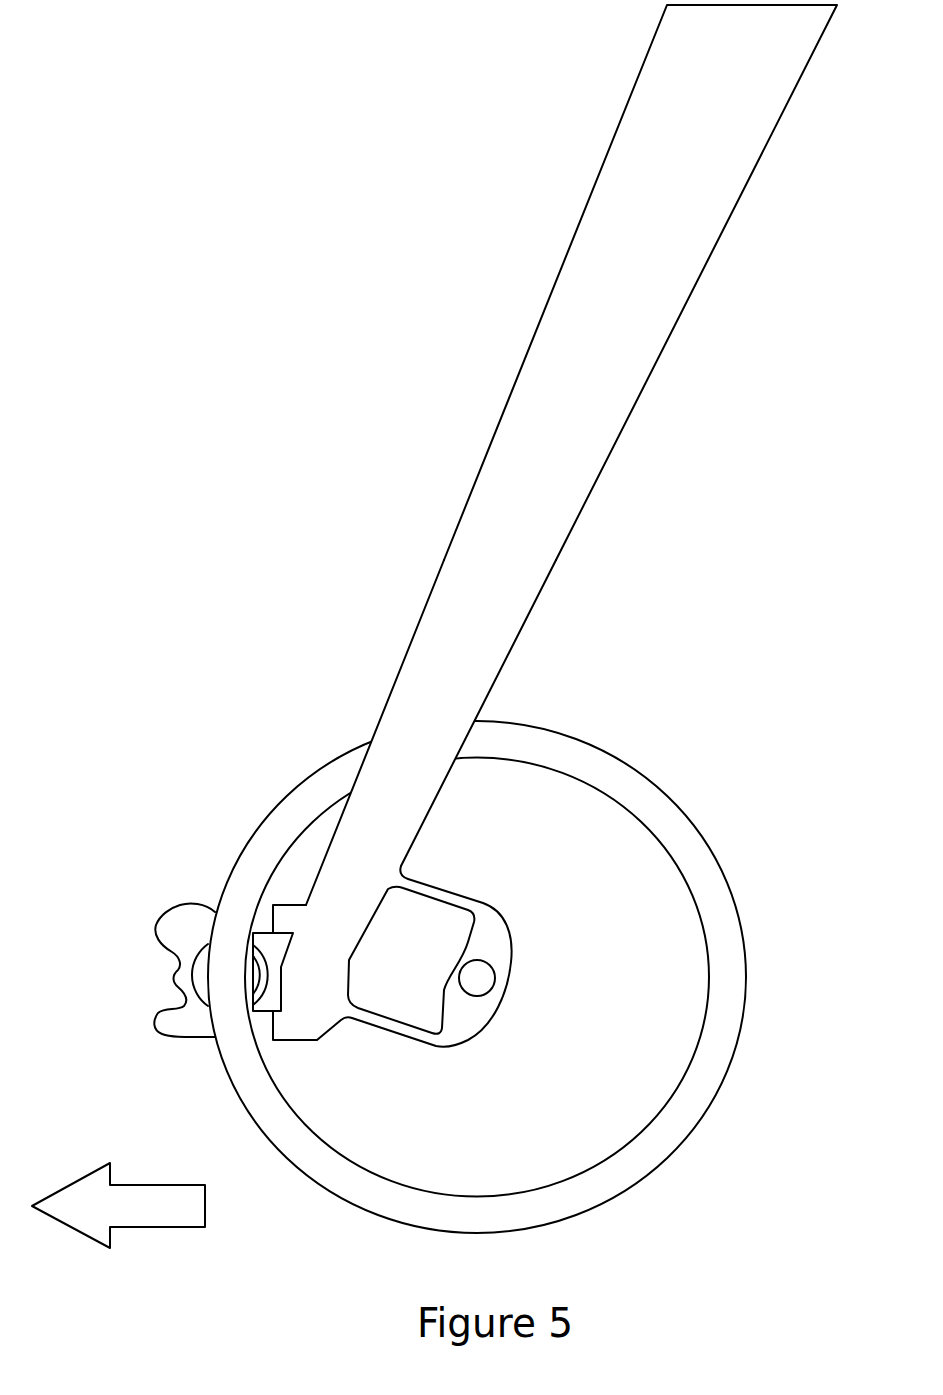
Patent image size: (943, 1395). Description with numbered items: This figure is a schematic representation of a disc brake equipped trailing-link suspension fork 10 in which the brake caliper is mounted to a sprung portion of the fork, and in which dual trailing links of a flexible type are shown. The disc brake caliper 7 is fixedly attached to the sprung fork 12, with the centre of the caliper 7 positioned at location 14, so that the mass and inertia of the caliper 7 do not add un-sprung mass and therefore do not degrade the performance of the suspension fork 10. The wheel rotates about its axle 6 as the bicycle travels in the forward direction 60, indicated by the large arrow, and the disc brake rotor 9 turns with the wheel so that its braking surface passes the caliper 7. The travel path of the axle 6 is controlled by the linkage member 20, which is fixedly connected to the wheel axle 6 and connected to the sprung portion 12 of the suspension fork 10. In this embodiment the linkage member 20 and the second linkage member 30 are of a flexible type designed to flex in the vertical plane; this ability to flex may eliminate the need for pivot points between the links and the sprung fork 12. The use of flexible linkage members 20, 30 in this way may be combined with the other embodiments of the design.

The trailing-link suspension fork 10 is at (668, 194).
The sprung fork 12 is at (443, 672).
The disc brake rotor 9 is at (686, 857).
The linkage member 30 is at (438, 893).
The linkage member 20 is at (392, 1025).
The wheel axle 6 is at (478, 982).
The location of caliper centre 14 is at (224, 975).
The disc brake caliper 7 is at (186, 1022).
The forward direction 60 is at (93, 1207).